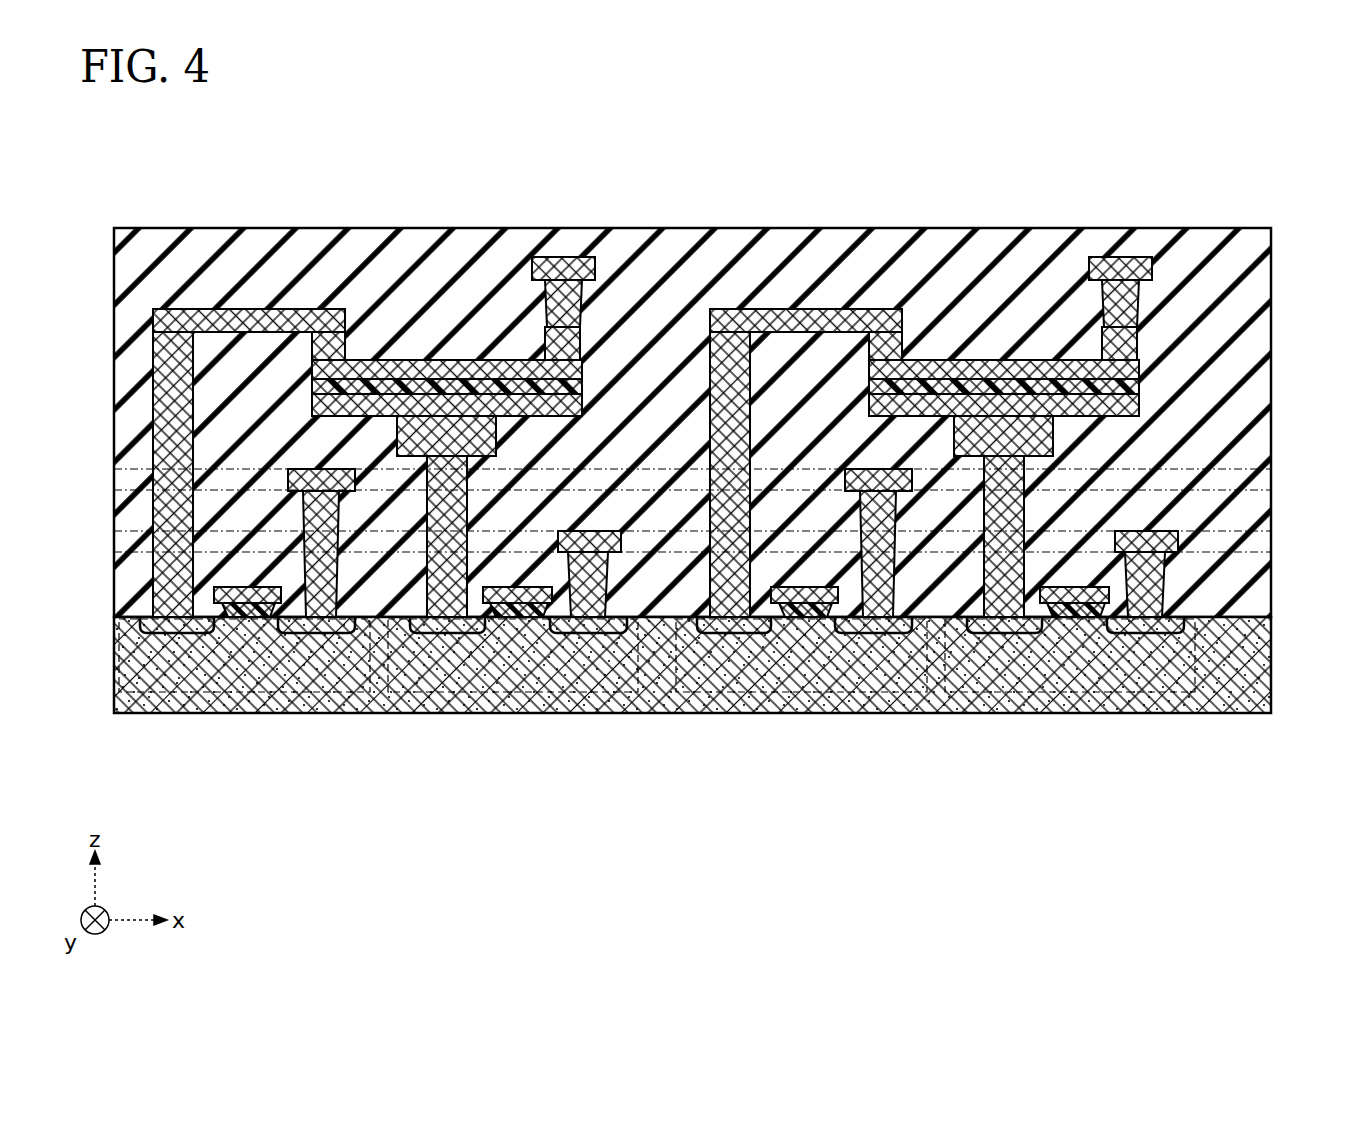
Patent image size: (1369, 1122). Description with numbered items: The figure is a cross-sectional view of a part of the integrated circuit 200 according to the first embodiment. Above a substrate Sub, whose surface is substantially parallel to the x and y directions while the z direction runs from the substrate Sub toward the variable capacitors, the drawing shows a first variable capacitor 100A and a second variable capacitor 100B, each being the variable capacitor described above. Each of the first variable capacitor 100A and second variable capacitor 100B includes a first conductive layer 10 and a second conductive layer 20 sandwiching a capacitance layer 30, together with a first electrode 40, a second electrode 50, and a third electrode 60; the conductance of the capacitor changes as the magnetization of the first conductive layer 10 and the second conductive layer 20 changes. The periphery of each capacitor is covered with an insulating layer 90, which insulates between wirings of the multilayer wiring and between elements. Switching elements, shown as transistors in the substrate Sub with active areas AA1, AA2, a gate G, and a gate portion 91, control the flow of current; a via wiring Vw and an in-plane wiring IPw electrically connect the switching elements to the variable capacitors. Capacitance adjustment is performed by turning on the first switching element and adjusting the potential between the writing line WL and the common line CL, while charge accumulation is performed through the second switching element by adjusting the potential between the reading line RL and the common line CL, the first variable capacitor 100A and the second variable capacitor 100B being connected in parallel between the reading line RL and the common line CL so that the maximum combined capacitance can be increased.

The integrated circuit 200 is at (1270, 181).
The insulating layer 90 is at (1258, 360).
The substrate Sub is at (1257, 672).
The first active area AA1 is at (200, 630).
The second active area AA2 is at (340, 630).
The gate electrode G is at (248, 598).
The gate insulating film 91 is at (262, 612).
The via wiring Vw is at (182, 334).
The in-plane wiring IPw is at (222, 312).
The first electrode 40 is at (326, 340).
The writing line WL is at (303, 471).
The first variable capacitor 100A is at (725, 272).
The second variable capacitor 100B is at (1037, 361).
The first conductive layer 10 is at (417, 365).
The capacitance layer 30 is at (397, 386).
The second conductive layer 20 is at (362, 398).
The third electrode 60 is at (447, 437).
The second electrode 50 is at (548, 338).
The common line CL is at (557, 268).
The reading line RL is at (600, 535).